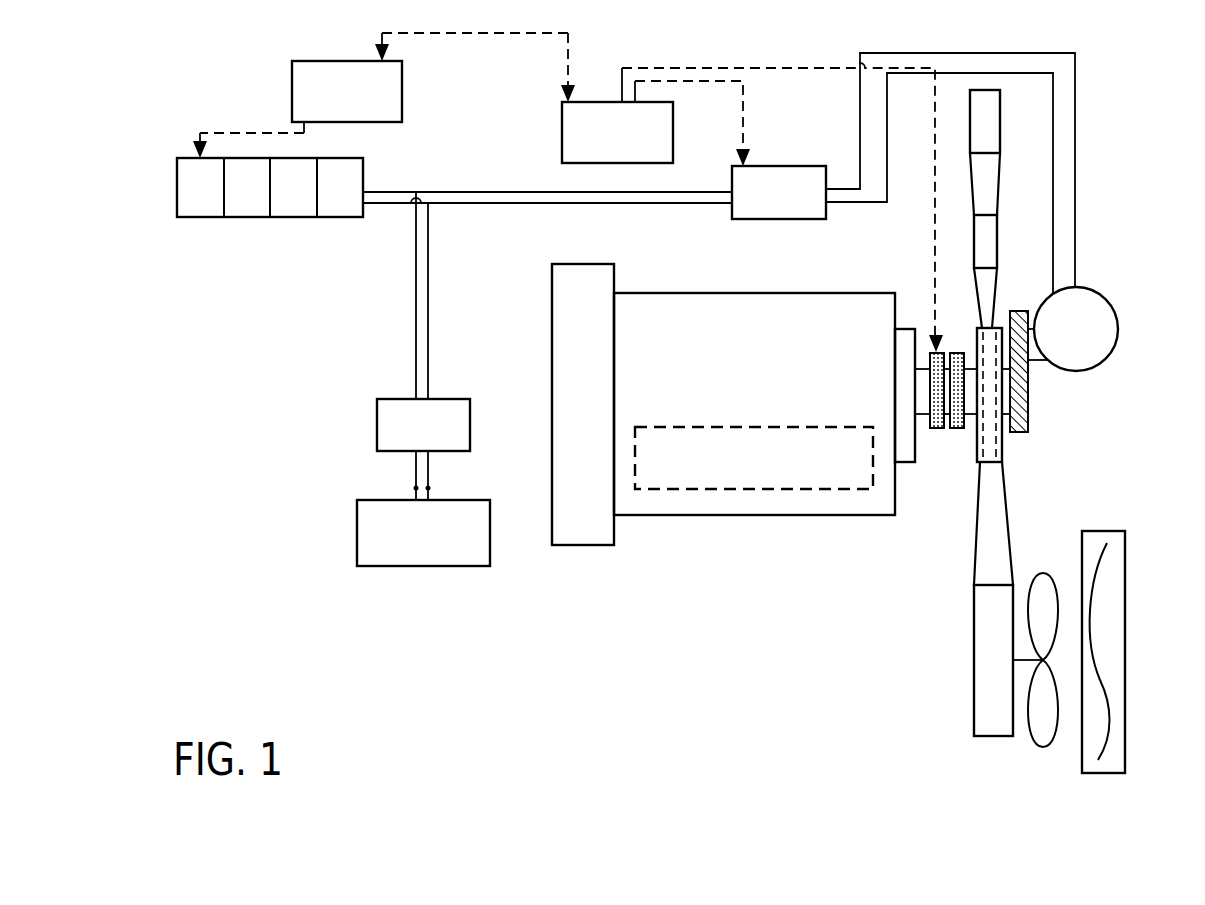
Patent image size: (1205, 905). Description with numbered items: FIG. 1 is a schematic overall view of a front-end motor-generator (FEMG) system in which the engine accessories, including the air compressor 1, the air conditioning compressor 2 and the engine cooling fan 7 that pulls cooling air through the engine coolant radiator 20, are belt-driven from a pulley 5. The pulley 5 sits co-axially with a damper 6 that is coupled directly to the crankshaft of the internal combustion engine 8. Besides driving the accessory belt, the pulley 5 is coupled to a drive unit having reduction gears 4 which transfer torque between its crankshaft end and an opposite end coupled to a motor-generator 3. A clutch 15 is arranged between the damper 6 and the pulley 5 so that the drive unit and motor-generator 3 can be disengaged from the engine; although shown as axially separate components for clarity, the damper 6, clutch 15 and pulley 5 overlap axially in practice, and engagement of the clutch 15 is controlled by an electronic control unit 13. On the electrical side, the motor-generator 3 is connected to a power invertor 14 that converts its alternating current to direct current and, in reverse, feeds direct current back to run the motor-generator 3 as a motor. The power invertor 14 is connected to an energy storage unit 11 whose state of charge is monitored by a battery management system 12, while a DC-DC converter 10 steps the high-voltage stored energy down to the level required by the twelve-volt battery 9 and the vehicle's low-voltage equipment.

The air compressor 1 is at (1000, 124).
The air conditioning compressor 2 is at (997, 243).
The motor-generator 3 is at (1118, 327).
The reduction gears 4 is at (1028, 398).
The pulley 5 is at (1003, 440).
The damper 6 is at (907, 463).
The engine cooling fan 7 is at (974, 695).
The internal combustion engine 8 is at (692, 515).
The 12 V battery 9 is at (393, 566).
The DC-DC converter 10 is at (377, 427).
The energy storage unit 11 is at (177, 187).
The battery management system 12 is at (292, 90).
The electronic control unit 13 is at (595, 76).
The power invertor 14 is at (783, 150).
The clutch 15 is at (942, 437).
The engine coolant radiator 20 is at (1125, 595).